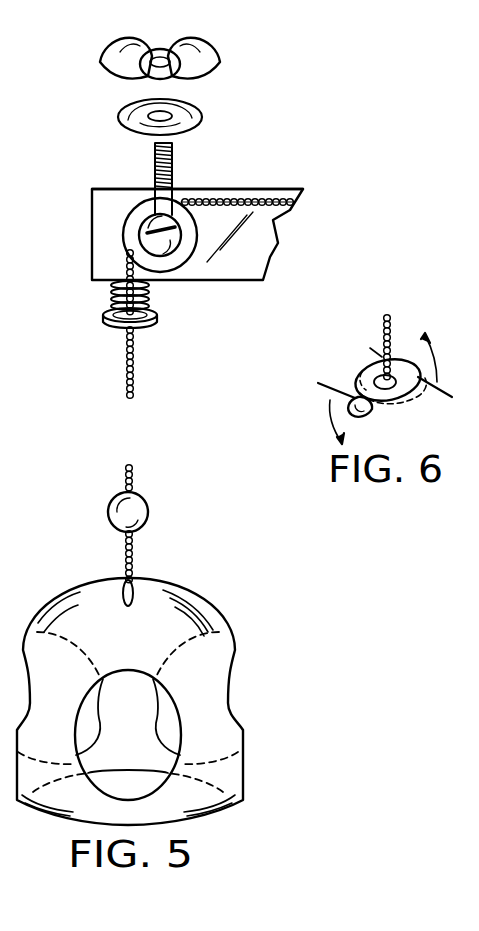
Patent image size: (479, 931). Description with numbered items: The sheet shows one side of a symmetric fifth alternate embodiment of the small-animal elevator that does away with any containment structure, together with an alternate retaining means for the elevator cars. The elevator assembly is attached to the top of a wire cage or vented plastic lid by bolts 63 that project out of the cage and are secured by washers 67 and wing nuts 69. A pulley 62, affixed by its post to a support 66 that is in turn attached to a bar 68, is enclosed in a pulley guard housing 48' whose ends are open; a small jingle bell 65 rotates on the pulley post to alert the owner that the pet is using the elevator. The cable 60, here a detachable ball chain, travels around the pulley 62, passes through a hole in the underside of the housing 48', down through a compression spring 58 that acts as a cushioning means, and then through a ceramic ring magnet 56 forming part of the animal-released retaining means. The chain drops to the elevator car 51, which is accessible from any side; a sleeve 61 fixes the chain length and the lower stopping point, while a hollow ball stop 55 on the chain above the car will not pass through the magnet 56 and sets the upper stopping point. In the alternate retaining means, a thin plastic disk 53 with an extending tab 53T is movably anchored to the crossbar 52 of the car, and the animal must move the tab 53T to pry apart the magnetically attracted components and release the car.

In FIG. 5, the guard housing 48' is at (197, 258).
In FIG. 5, the elevator car 51 is at (213, 612).
In FIG. 6, the crossbar 52 is at (432, 400).
In FIG. 6, the disk 53 is at (372, 367).
In FIG. 6, the tab 53T is at (407, 433).
In FIG. 5, the metallic component/car stop 55 is at (147, 503).
In FIG. 5, the ring magnet 56 is at (112, 333).
In FIG. 5, the compression spring 58 is at (110, 300).
In FIG. 5, the cable 60 is at (135, 365).
In FIG. 6, the cable 60 is at (392, 322).
In FIG. 5, the sleeve 61 is at (143, 583).
In FIG. 5, the pulley 62 is at (180, 263).
In FIG. 5, the bolt 63 is at (153, 166).
In FIG. 5, the jingle bell 65 is at (203, 197).
In FIG. 5, the support 66 is at (173, 192).
In FIG. 5, the washer 67 is at (197, 125).
In FIG. 5, the bar 68 is at (268, 188).
In FIG. 5, the wing nut 69 is at (197, 70).